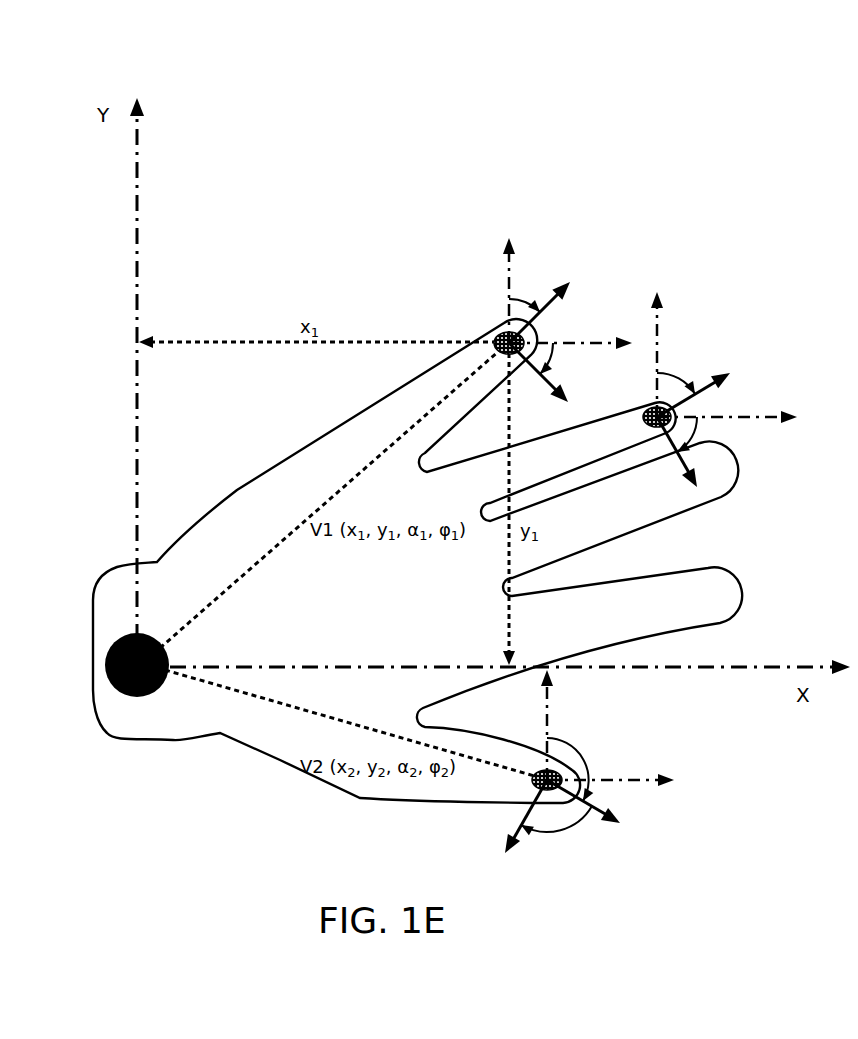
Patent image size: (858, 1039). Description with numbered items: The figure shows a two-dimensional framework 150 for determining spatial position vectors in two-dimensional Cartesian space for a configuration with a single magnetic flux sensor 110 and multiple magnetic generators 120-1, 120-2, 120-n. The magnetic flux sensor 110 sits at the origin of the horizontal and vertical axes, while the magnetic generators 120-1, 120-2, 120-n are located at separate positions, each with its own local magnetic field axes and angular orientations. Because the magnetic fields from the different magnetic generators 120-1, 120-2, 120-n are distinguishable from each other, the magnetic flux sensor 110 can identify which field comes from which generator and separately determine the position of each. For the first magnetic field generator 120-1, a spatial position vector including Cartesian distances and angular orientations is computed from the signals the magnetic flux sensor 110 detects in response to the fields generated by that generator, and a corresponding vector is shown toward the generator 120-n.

The 2-dimensional framework 150 is at (263, 78).
The magnetic flux sensor 110 is at (91, 698).
The first magnetic field generator 120-1 is at (493, 325).
The magnetic generator 120-2 is at (632, 440).
The magnetic generator 120-n is at (663, 760).